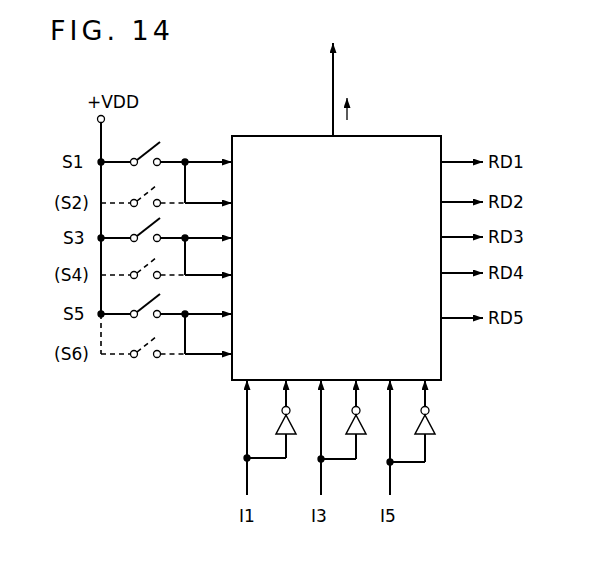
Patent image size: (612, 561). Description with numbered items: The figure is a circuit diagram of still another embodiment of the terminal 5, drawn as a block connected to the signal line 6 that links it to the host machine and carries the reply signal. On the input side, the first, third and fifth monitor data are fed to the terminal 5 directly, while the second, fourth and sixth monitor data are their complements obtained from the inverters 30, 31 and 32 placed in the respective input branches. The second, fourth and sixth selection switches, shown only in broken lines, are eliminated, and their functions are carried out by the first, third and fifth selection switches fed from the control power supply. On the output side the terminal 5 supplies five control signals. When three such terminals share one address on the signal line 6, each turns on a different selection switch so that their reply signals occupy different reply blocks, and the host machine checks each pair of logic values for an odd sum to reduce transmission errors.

The terminal 5 is at (470, 92).
The signal line 6 is at (335, 68).
The inverter 30 is at (292, 434).
The inverter 31 is at (361, 434).
The inverter 32 is at (430, 434).